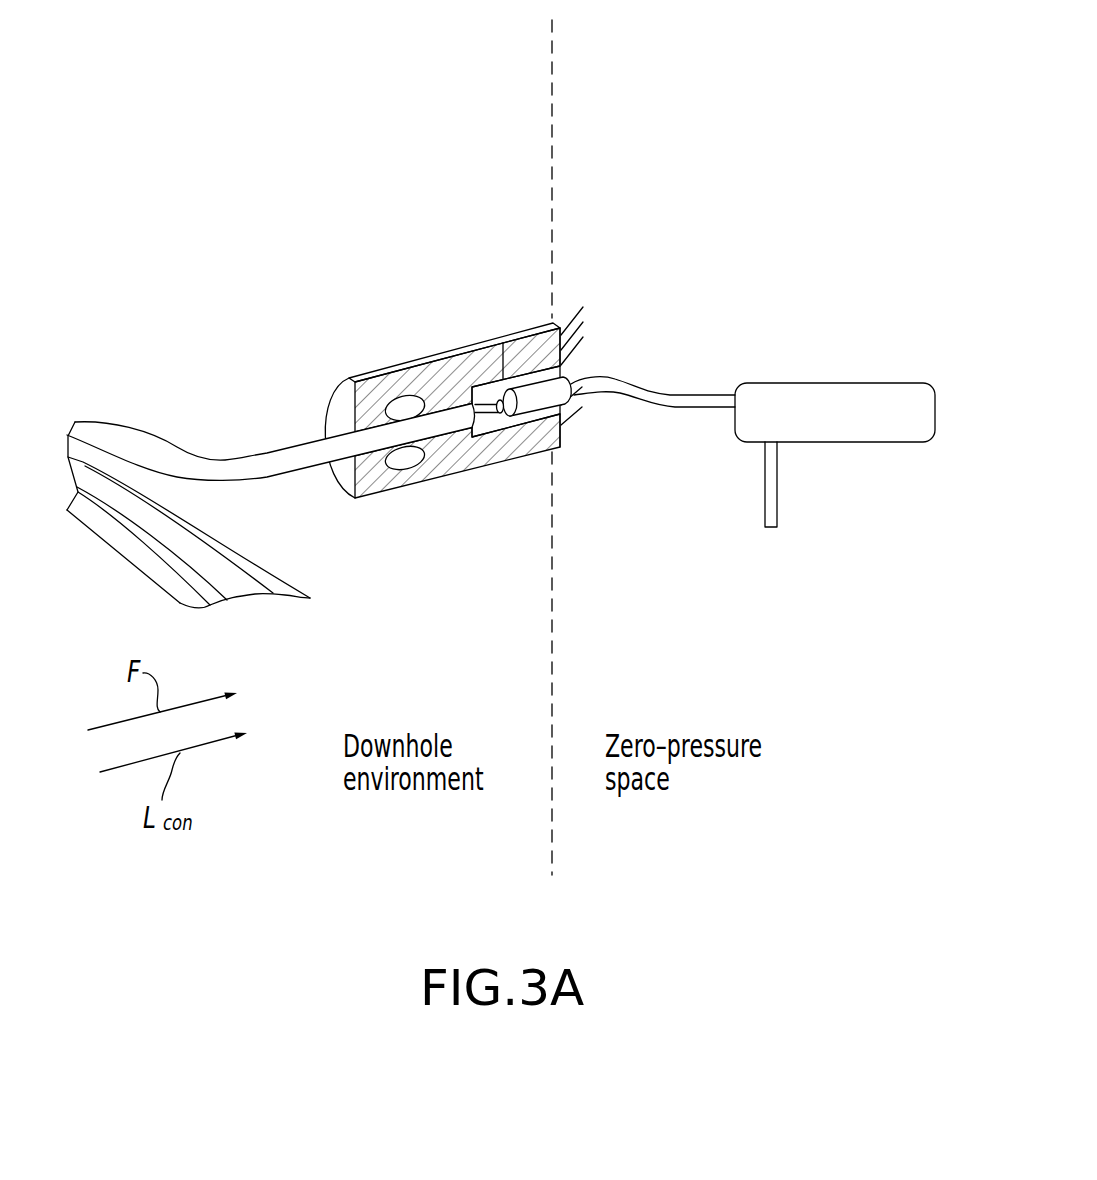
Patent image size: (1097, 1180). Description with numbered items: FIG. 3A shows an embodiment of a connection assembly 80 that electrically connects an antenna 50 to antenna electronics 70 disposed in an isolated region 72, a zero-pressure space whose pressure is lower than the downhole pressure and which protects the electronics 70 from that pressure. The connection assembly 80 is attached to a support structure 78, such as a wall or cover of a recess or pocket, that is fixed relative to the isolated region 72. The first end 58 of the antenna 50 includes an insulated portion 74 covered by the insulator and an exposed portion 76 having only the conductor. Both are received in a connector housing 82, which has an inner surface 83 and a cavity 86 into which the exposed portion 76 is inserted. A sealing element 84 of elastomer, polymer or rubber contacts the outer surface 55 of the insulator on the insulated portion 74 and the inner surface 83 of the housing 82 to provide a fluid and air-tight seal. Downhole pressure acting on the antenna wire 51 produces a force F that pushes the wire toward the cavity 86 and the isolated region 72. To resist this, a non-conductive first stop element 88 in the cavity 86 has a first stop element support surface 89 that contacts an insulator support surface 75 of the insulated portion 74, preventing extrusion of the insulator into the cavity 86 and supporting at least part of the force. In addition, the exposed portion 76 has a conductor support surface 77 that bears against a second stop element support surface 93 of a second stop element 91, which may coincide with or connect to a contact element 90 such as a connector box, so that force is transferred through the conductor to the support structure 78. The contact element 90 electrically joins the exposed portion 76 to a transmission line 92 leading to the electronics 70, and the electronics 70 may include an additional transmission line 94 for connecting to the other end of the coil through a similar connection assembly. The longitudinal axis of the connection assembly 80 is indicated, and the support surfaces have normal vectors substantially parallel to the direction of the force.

The antenna 50 is at (113, 380).
The antenna wire 51 is at (283, 468).
The outer surface 55 is at (447, 473).
The first end 58 is at (337, 427).
The antenna electronics 70 is at (823, 442).
The isolated region 72 is at (768, 122).
The insulated portion 74 is at (368, 488).
The insulator support surface 75 is at (468, 455).
The exposed portion 76 is at (458, 397).
The conductor support surface 77 is at (500, 410).
The support structure 78 is at (580, 345).
The connection assembly 80 is at (378, 348).
The connector housing 82 is at (513, 347).
The inner surface 83 is at (390, 387).
The sealing element 84 is at (403, 467).
The cavity 86 is at (492, 398).
The first stop element 88 is at (557, 328).
The first stop element support surface 89 is at (460, 386).
The contact element 90 is at (570, 402).
The second stop element 91 is at (533, 427).
The transmission line 92 is at (717, 392).
The second stop element support surface 93 is at (505, 418).
The additional transmission line 94 is at (777, 490).